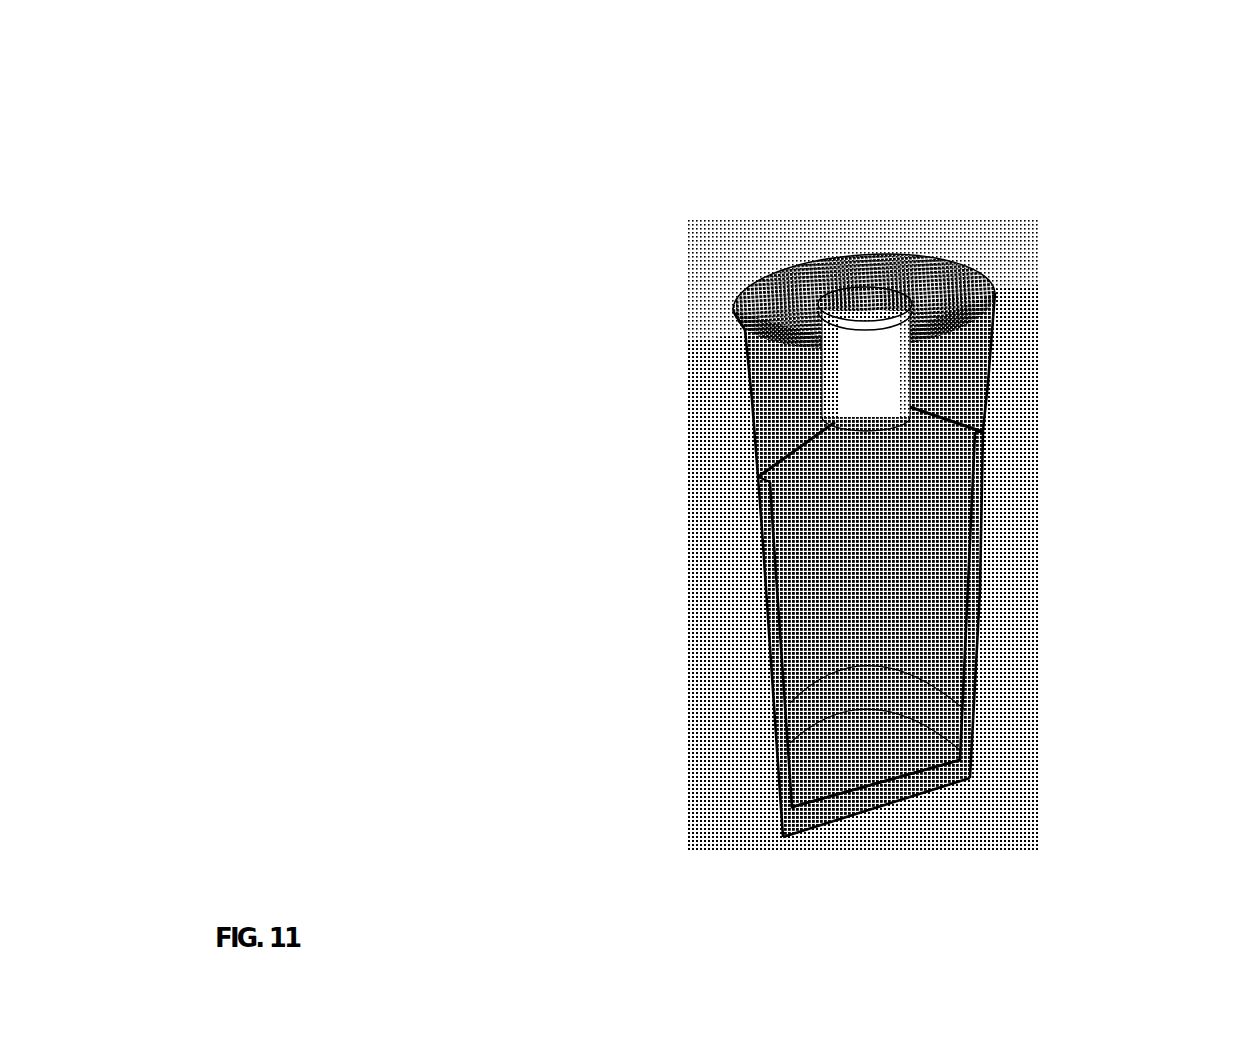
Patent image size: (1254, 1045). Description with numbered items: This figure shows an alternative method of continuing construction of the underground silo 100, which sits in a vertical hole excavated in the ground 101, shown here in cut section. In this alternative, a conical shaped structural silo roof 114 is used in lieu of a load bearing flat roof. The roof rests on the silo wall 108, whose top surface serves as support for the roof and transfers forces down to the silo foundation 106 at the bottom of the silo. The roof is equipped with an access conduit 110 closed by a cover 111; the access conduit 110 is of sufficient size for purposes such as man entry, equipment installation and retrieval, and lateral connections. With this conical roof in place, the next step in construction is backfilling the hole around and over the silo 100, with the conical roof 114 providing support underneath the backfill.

The underground silo 100 is at (306, 118).
The ground 101 is at (687, 610).
The silo foundation 106 is at (883, 795).
The silo wall 108 is at (972, 580).
The access conduit 110 is at (830, 355).
The cover 111 is at (853, 293).
The conical shaped structural silo roof 114 is at (947, 412).